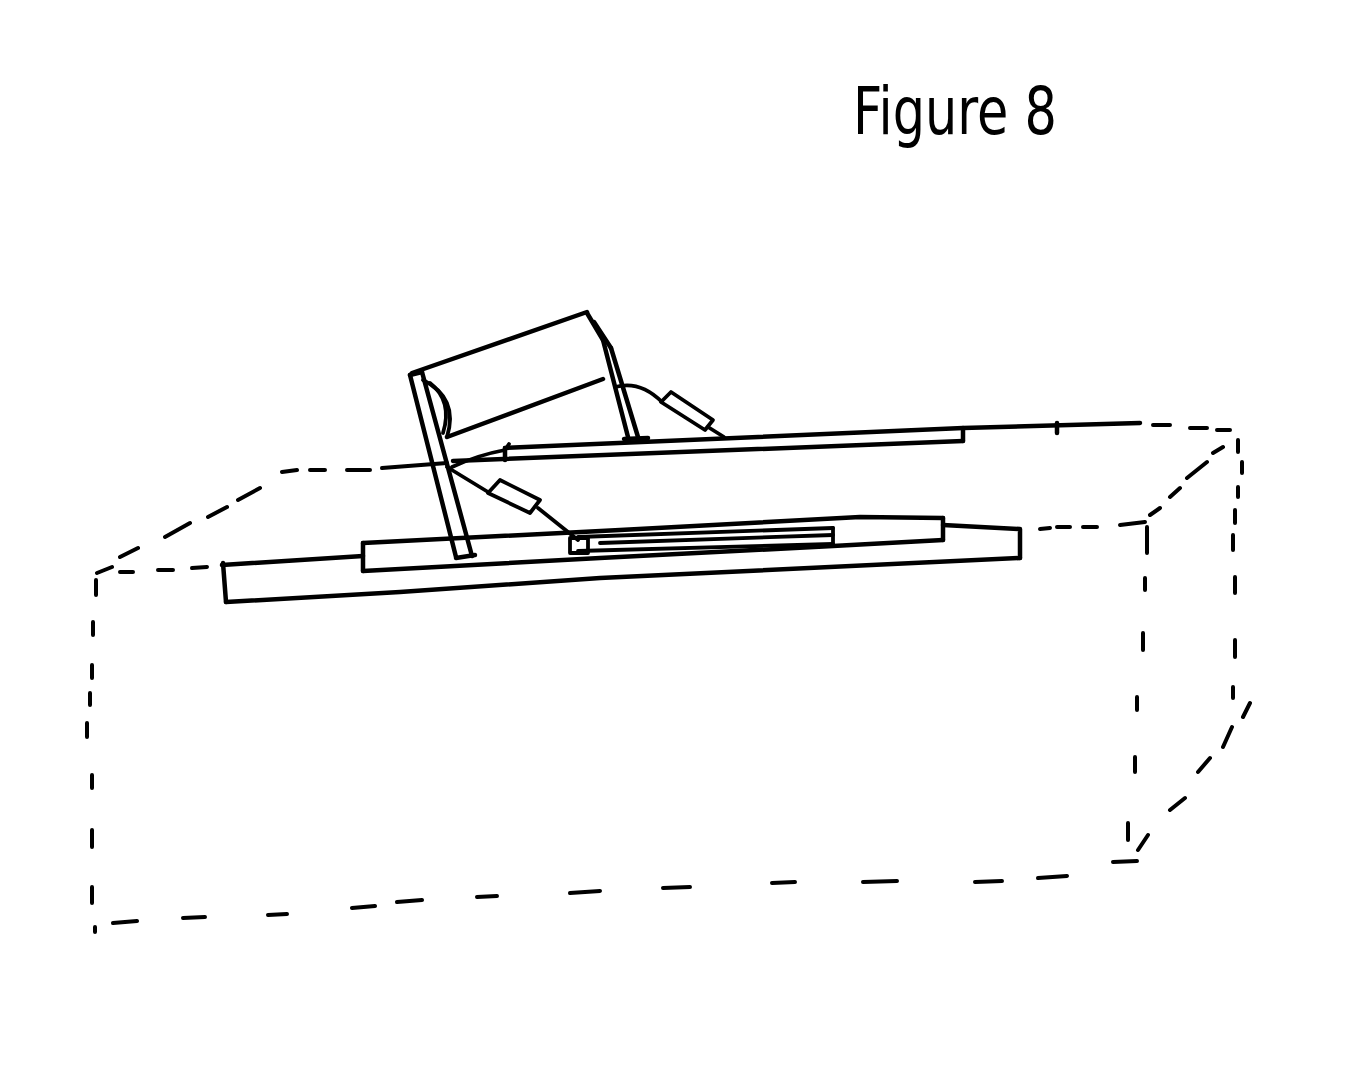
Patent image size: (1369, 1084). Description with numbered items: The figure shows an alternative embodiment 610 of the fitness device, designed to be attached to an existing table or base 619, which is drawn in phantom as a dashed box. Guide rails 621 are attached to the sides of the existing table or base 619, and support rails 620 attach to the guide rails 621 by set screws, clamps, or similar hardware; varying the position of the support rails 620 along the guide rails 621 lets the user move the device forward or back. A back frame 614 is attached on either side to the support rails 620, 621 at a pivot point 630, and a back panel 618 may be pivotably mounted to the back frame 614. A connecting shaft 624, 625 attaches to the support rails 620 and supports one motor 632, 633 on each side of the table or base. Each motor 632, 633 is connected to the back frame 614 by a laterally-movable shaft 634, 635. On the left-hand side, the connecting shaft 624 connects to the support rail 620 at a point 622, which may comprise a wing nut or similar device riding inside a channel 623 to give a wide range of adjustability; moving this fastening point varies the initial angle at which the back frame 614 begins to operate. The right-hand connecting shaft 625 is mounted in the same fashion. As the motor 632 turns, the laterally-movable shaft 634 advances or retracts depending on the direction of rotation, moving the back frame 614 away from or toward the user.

The alternative embodiment 610 is at (908, 288).
The back frame 614 is at (413, 387).
The back panel 618 is at (578, 332).
The existing table or base 619 is at (1193, 442).
The support rail 620 is at (903, 533).
The guide rail 621 is at (960, 434).
The point 622 is at (583, 553).
The channel 623 is at (683, 538).
The connecting shaft 624 is at (547, 517).
The connecting shaft 625 is at (718, 428).
The pivot point 630 is at (458, 560).
The motor 632 is at (523, 493).
The motor 633 is at (690, 407).
The laterally-movable shaft 634 is at (503, 453).
The laterally-movable shaft 635 is at (648, 387).